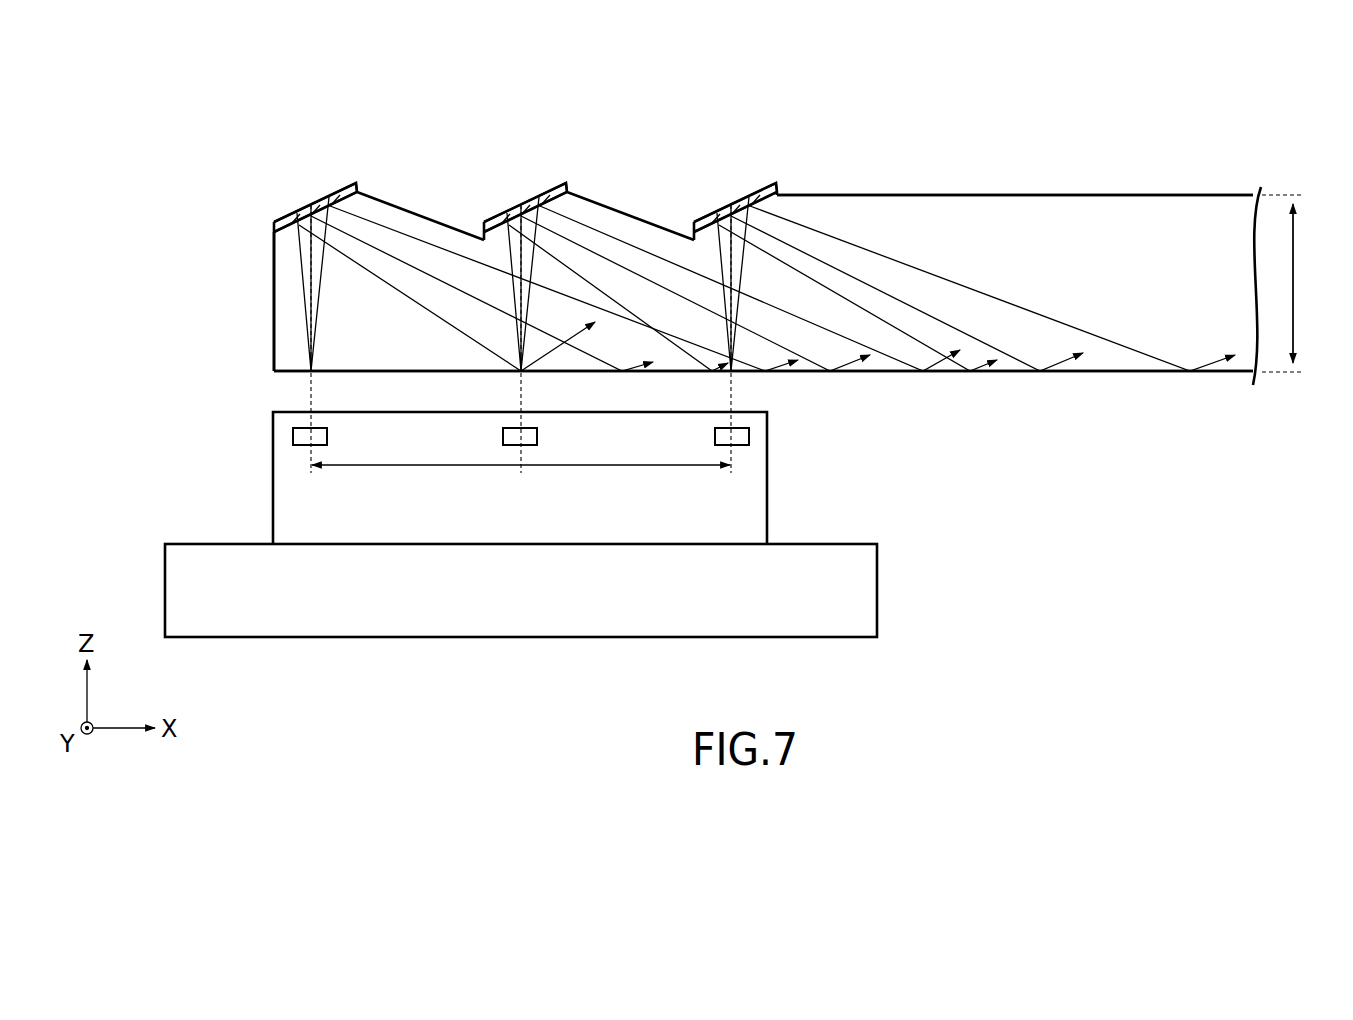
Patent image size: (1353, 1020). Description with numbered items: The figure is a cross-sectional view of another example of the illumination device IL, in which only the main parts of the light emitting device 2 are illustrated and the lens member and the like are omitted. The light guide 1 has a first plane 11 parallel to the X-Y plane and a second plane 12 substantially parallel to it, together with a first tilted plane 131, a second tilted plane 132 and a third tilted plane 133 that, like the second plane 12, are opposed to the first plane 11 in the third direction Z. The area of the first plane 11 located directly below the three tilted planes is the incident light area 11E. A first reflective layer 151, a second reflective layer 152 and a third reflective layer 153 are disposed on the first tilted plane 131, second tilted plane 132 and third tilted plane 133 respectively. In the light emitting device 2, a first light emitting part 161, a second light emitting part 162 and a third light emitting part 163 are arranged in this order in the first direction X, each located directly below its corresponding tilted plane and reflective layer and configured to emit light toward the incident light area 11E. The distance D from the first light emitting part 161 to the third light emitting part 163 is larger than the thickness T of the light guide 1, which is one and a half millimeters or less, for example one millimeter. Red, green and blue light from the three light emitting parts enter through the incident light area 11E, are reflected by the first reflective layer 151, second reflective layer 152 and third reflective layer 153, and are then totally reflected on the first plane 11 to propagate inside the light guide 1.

The light guide 1 is at (1203, 195).
The light emitting device 2 is at (877, 637).
The first plane 11 is at (1097, 375).
The incident light area 11E is at (299, 374).
The second plane 12 is at (1006, 192).
The first tilted plane 131 is at (310, 207).
The second tilted plane 132 is at (520, 207).
The third tilted plane 133 is at (730, 207).
The first reflective layer 151 is at (358, 186).
The second reflective layer 152 is at (568, 186).
The third reflective layer 153 is at (778, 186).
The first light emitting part 161 is at (328, 437).
The second light emitting part 162 is at (538, 437).
The third light emitting part 163 is at (750, 437).
The distance D is at (520, 467).
The thickness T is at (1297, 277).
The illumination device IL is at (1059, 537).